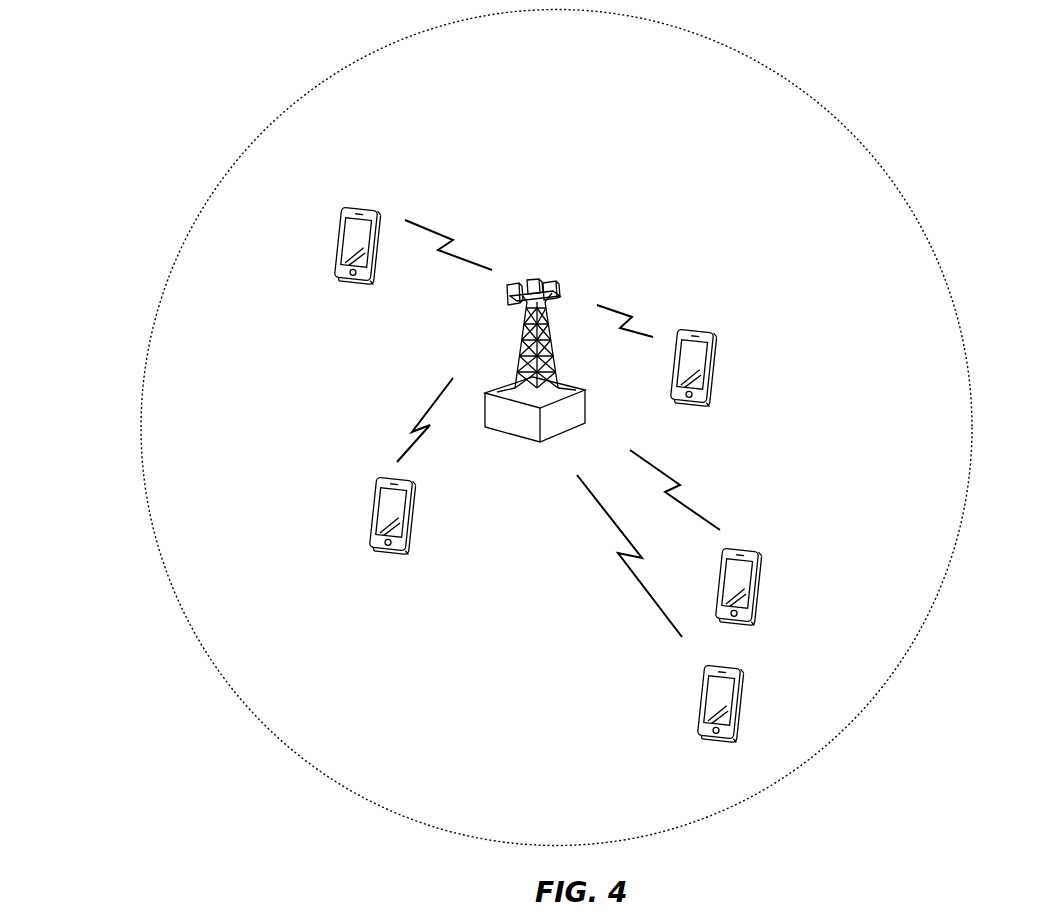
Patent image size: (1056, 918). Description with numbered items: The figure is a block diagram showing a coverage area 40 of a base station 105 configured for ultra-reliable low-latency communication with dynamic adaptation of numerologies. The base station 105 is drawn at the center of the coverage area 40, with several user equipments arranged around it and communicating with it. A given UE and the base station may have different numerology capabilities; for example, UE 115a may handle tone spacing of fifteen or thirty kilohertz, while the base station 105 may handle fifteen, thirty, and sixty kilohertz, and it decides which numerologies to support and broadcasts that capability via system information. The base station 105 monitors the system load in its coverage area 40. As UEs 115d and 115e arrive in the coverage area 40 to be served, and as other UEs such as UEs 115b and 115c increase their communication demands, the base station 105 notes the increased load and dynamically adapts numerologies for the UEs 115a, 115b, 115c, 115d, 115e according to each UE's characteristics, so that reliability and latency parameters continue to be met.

The coverage area 40 is at (962, 117).
The base station 105 is at (516, 440).
The UE 115a is at (338, 225).
The UE 115b is at (715, 362).
The UE 115c is at (719, 564).
The UE 115d is at (701, 683).
The UE 115e is at (372, 496).